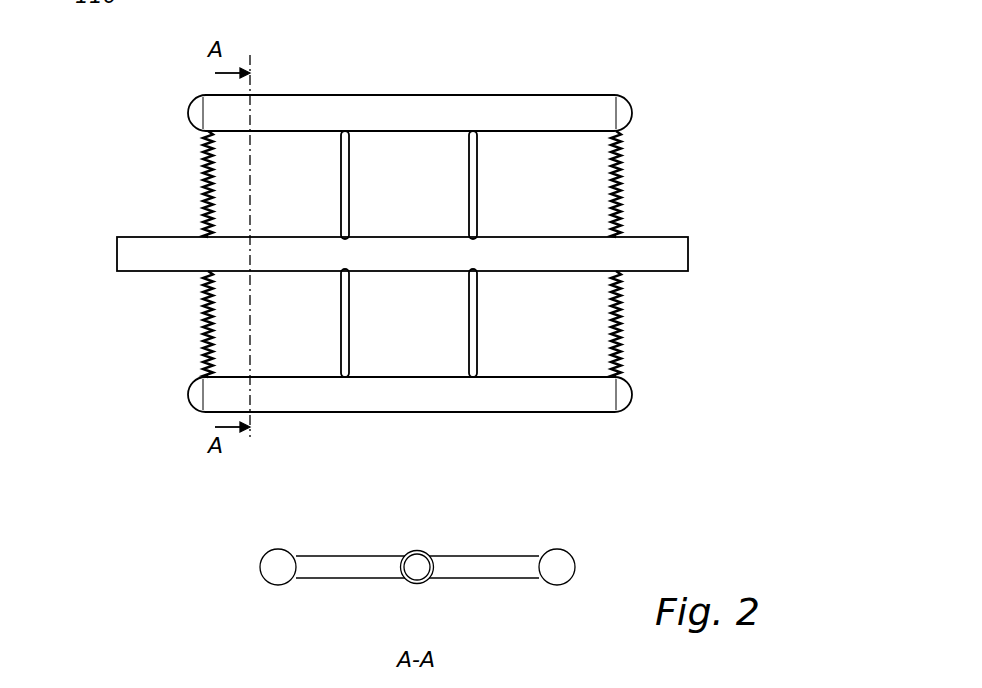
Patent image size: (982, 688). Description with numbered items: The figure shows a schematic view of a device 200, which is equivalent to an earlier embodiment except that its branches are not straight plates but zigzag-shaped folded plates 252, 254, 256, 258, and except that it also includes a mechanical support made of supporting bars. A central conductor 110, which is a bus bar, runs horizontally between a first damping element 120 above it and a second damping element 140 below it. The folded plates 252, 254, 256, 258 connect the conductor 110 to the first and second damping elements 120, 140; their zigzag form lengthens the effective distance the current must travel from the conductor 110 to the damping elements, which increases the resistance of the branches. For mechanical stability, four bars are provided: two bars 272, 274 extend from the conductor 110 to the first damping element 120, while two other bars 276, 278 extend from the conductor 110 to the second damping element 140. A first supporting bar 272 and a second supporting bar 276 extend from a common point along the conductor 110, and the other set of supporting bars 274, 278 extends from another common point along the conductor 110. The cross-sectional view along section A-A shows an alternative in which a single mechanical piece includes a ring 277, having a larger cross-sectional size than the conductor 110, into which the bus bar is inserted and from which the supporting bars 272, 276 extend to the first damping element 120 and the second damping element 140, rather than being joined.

The device 200 is at (643, 59).
The first damping element 120 is at (557, 107).
The second damping element 140 is at (548, 397).
The conductor 110 is at (658, 243).
The folded plate 252 is at (205, 186).
The folded plate 254 is at (608, 186).
The folded plate 256 is at (205, 322).
The folded plate 258 is at (618, 320).
The first supporting bar 272 is at (340, 186).
The supporting bar 274 is at (468, 186).
The second supporting bar 276 is at (350, 320).
The supporting bar 278 is at (478, 318).
The ring 277 is at (415, 552).